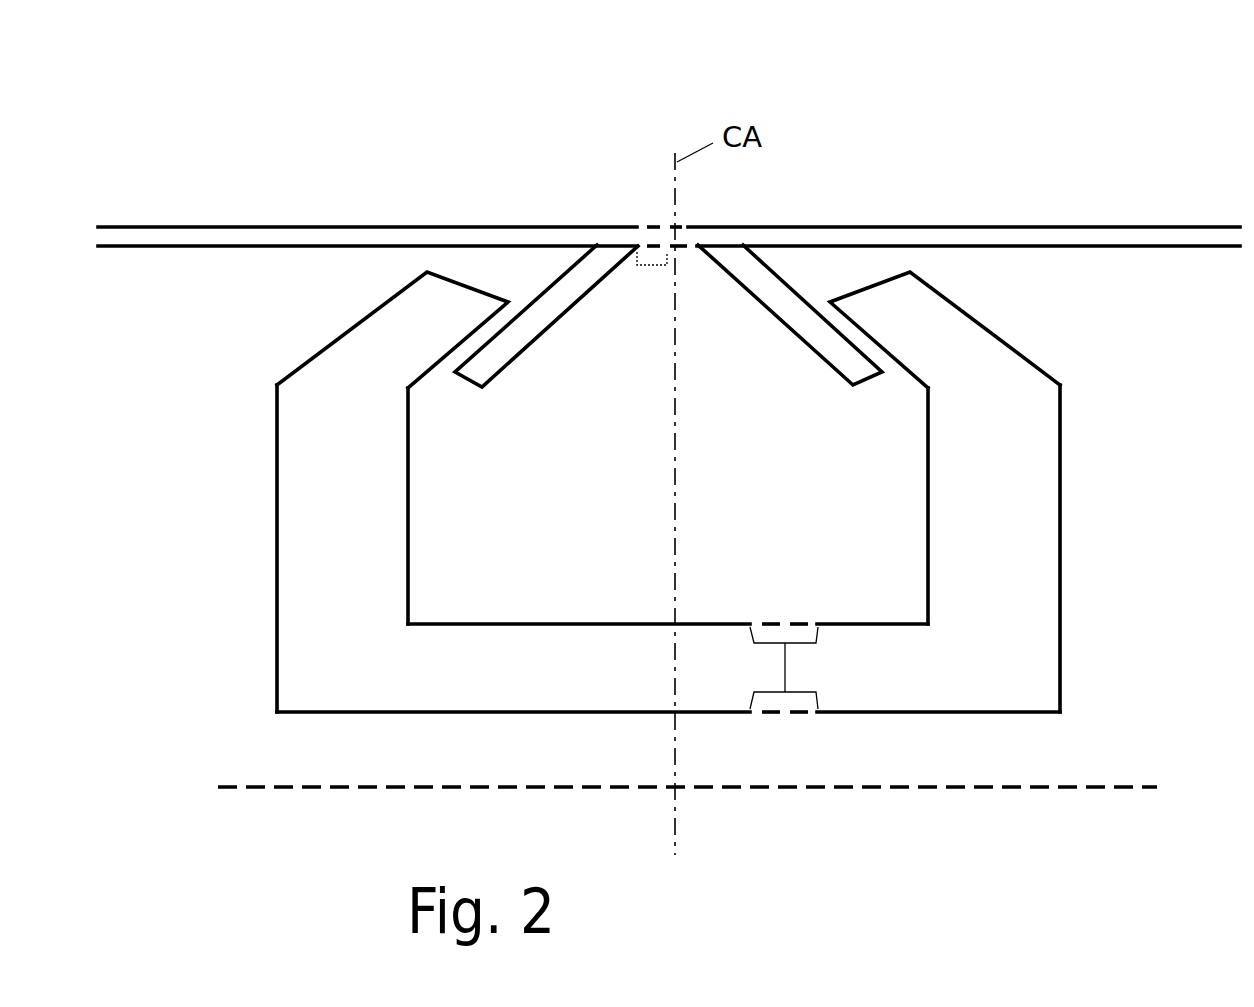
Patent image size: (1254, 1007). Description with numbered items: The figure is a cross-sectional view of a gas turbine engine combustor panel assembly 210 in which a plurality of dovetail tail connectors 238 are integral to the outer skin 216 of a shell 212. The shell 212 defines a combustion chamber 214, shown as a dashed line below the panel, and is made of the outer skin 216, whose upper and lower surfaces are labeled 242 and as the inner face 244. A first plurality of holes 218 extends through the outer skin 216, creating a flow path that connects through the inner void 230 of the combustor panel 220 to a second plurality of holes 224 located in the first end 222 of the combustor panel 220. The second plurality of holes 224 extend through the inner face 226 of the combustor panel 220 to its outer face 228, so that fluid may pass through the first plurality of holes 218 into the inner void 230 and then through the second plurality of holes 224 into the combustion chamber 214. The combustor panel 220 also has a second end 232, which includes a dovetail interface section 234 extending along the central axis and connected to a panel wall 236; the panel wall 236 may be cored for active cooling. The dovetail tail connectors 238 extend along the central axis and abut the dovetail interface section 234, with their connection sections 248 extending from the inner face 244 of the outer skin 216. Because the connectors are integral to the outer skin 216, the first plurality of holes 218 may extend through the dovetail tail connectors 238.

The combustor panel assembly 210 is at (165, 132).
The shell 212 is at (696, 518).
The combustion chamber 214 is at (1122, 783).
The outer skin 216 is at (668, 221).
The first plurality of holes 218 is at (652, 265).
The combustor panel 220 is at (265, 467).
The first end 222 is at (265, 703).
The second plurality of holes 224 is at (785, 668).
The inner face 226 is at (482, 623).
The outer face 228 is at (943, 717).
The inner void 230 is at (558, 488).
The second end 232 is at (327, 320).
The dovetail interface section 234 is at (972, 313).
The panel wall 236 is at (1063, 437).
The dovetail tail connectors 238 is at (537, 338).
The upper surface of panel 242 is at (233, 225).
The inner face of outer skin 244 is at (135, 248).
The connection sections 248 is at (792, 288).